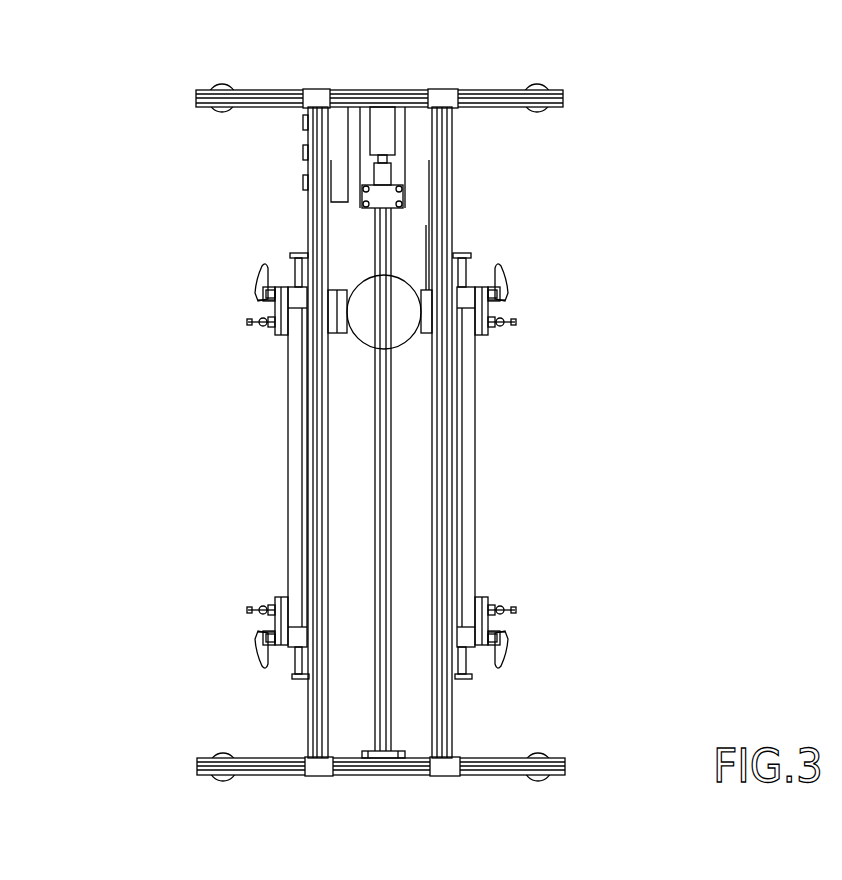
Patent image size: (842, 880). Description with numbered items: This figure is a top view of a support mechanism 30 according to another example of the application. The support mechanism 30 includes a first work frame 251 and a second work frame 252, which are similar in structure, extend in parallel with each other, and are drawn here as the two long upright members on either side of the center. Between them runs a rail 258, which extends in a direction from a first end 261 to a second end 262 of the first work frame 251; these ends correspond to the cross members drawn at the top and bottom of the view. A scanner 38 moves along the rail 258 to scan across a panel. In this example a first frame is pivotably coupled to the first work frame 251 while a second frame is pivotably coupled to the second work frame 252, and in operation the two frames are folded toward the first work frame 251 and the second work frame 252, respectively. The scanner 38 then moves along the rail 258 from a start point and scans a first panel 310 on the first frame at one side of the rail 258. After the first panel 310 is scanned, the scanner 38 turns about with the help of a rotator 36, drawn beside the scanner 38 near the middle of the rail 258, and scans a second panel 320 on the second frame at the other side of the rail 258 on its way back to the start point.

The support mechanism 30 is at (152, 220).
The first end 261 is at (373, 72).
The second end 262 is at (400, 793).
The first work frame 251 is at (310, 225).
The second work frame 252 is at (452, 217).
The rail 258 is at (392, 493).
The rotator 36 is at (362, 348).
The scanner 38 is at (420, 337).
The first panel 310 is at (288, 462).
The second panel 320 is at (475, 525).